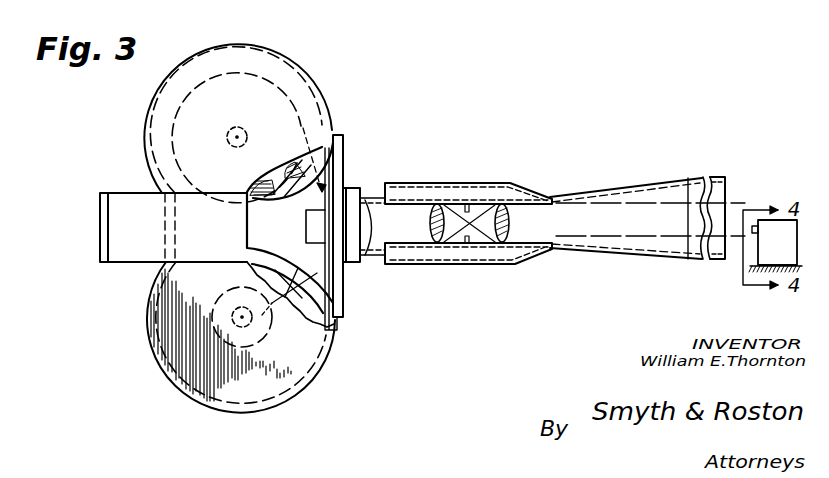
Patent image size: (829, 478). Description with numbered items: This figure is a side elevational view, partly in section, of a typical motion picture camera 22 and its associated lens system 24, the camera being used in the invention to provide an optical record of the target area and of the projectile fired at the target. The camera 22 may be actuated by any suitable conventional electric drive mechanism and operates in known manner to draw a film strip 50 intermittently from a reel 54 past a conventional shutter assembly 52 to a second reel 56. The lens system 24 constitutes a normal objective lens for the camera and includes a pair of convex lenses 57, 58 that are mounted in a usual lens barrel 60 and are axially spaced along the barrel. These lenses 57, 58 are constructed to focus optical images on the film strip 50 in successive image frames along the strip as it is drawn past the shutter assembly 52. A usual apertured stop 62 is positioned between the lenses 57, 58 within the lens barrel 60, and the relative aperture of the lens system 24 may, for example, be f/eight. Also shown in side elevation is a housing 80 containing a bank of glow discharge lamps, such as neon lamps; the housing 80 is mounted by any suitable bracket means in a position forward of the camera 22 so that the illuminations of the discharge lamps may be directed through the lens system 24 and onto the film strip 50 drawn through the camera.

The camera 22 is at (276, 102).
The lens system 24 is at (473, 203).
The film strip 50 is at (338, 169).
The shutter assembly 52 is at (341, 206).
The reel 54 is at (292, 167).
The reel 56 is at (272, 337).
The convex lens 57 is at (527, 192).
The convex lens 58 is at (418, 204).
The lens barrel 60 is at (546, 196).
The apertured stop 62 is at (478, 205).
The housing 80 is at (771, 246).